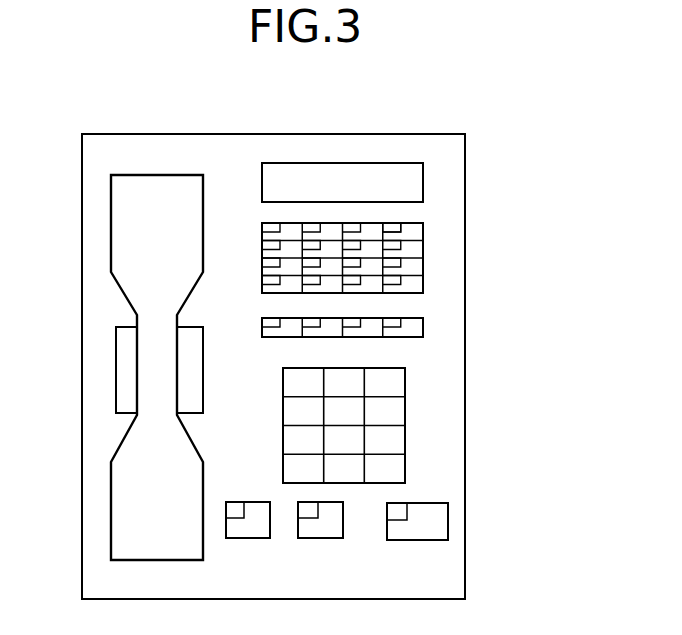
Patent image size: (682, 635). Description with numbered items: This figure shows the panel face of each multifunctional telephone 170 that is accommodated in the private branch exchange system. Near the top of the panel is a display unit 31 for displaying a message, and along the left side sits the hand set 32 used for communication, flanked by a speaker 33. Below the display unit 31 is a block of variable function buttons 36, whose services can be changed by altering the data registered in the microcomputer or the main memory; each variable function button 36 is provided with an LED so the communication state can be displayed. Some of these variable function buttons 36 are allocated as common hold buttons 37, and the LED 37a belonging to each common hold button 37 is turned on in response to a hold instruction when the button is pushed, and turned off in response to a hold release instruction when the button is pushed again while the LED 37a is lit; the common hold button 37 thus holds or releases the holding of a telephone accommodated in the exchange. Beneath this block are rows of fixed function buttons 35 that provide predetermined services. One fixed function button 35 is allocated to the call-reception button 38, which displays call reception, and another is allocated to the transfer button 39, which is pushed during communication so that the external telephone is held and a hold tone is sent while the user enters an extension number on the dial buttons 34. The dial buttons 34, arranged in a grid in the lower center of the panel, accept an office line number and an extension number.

The multifunctional telephone 170 is at (465, 158).
The display unit 31 is at (329, 162).
The hand set 32 is at (110, 237).
The speaker 33 is at (116, 367).
The dial buttons 34 is at (276, 383).
The fixed function buttons 35 is at (332, 420).
The variable function buttons 36 is at (374, 232).
The common hold buttons 37 is at (428, 243).
The LED 37a is at (398, 222).
The call-reception button 38 is at (258, 538).
The transfer button 39 is at (373, 337).